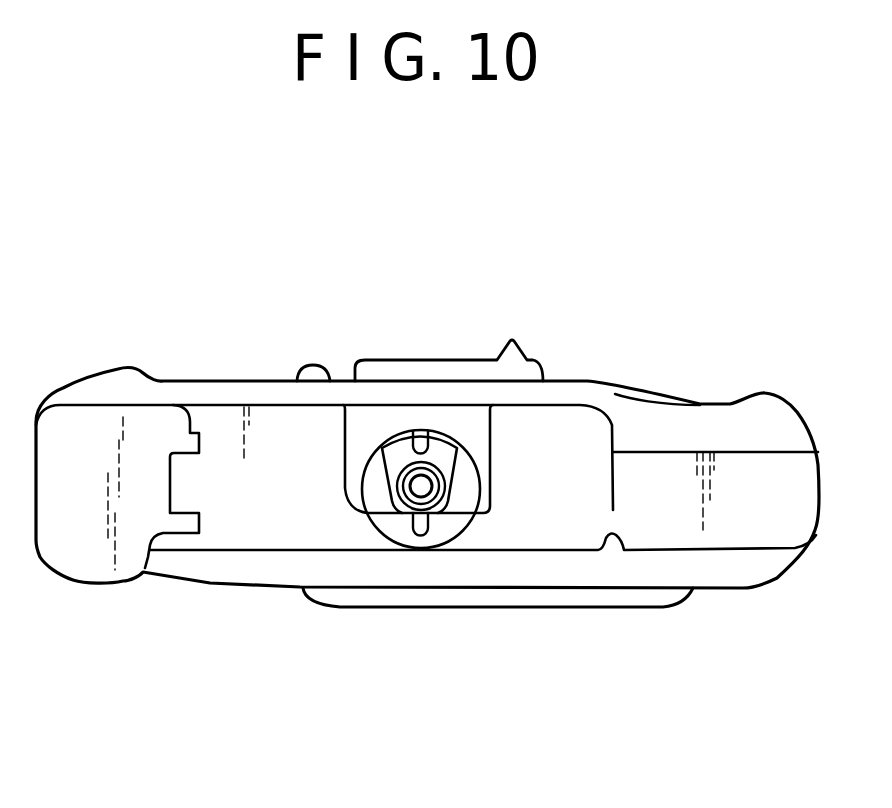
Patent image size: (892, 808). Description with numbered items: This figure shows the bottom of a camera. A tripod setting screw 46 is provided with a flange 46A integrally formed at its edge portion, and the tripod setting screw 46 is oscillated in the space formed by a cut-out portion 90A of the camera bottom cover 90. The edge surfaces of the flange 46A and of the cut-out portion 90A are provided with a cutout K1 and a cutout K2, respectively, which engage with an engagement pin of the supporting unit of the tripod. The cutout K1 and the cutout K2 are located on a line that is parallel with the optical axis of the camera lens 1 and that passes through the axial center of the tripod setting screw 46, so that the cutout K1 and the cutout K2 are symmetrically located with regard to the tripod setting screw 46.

The camera lens 1 is at (435, 352).
The camera bottom cover 90 is at (278, 440).
The cut-out portion 90A is at (377, 500).
The tripod setting screw 46 is at (413, 487).
The flange 46A is at (452, 486).
The cutout K1 is at (421, 437).
The cutout K2 is at (432, 530).